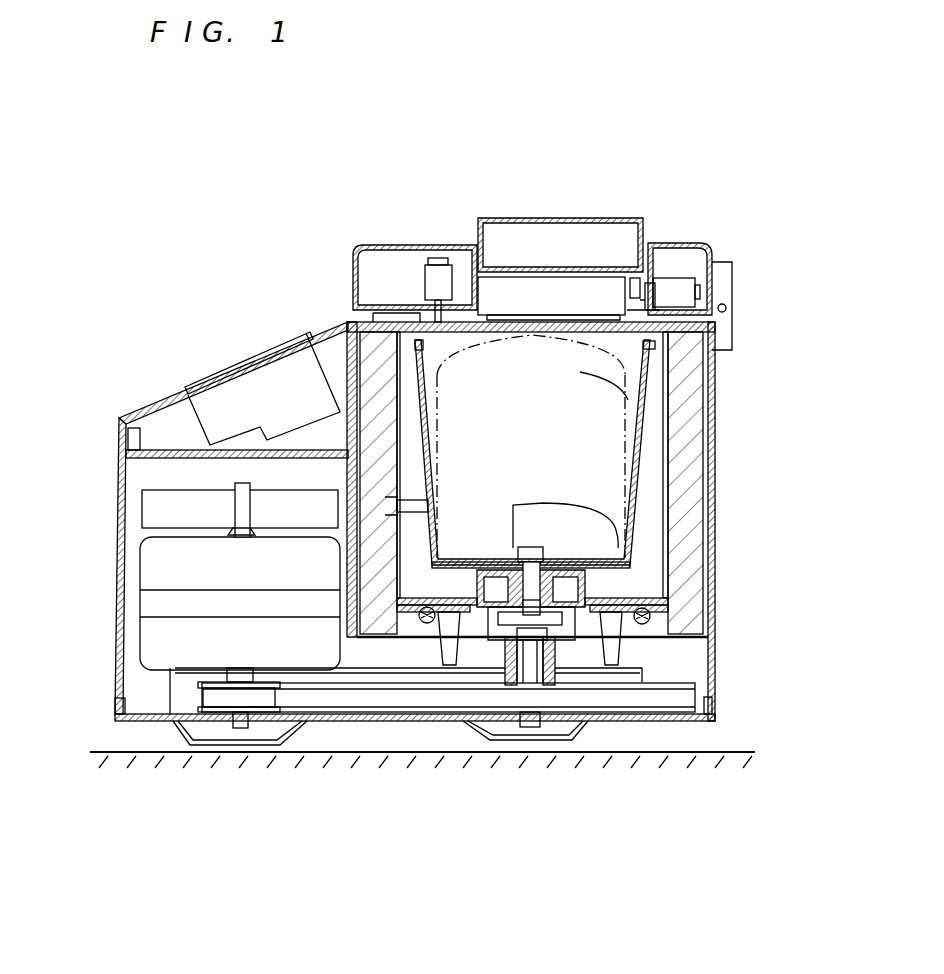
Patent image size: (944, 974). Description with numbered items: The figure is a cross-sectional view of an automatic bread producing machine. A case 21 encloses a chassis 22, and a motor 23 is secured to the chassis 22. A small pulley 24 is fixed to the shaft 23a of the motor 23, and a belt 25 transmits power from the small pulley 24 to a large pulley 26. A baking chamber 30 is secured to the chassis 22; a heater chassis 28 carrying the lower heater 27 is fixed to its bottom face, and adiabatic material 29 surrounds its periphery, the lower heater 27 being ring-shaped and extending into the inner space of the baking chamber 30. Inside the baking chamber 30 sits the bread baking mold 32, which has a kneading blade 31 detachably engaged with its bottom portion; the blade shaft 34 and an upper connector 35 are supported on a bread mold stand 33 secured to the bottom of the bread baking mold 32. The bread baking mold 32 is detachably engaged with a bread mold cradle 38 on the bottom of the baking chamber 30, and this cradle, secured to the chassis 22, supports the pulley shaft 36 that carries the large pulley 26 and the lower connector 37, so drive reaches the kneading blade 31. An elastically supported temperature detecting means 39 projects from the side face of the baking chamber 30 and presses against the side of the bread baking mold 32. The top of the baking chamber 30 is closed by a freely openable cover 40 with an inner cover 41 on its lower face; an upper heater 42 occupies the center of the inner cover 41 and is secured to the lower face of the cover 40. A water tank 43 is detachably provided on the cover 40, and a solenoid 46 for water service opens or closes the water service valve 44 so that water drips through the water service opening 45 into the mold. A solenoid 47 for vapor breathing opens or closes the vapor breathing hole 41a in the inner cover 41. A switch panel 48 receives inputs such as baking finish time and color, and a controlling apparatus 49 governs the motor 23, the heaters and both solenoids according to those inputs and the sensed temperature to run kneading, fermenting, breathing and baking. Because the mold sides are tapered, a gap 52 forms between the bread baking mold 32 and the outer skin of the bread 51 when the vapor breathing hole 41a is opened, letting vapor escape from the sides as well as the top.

The case 21 is at (120, 474).
The chassis 22 is at (185, 670).
The motor 23 is at (157, 598).
The shaft 23a is at (237, 728).
The small pulley 24 is at (207, 708).
The belt 25 is at (297, 700).
The large pulley 26 is at (370, 712).
The lower heater 27 is at (650, 622).
The heater chassis 28 is at (662, 612).
The adiabatic material 29 is at (678, 530).
The baking chamber 30 is at (667, 562).
The kneading blade 31 is at (587, 535).
The bread baking mold 32 is at (633, 477).
The bread mold stand 33 is at (492, 600).
The blade shaft 34 is at (514, 598).
The upper connector 35 is at (658, 690).
The pulley shaft 36 is at (531, 665).
The lower connector 37 is at (562, 630).
The bread mold cradle 38 is at (548, 624).
The temperature detecting means 39 is at (412, 497).
The cover 40 is at (708, 250).
The inner cover 41 is at (410, 322).
The vapor breathing hole 41a is at (420, 320).
The upper heater 42 is at (533, 313).
The water tank 43 is at (612, 218).
The water service valve 44 is at (652, 272).
The water service opening 45 is at (725, 312).
The solenoid for water service 46 is at (677, 290).
The solenoid for vapor breathing 47 is at (438, 282).
The switch panel 48 is at (243, 393).
The controlling apparatus 49 is at (200, 380).
The bread 51 is at (650, 386).
The gap 52 is at (628, 422).